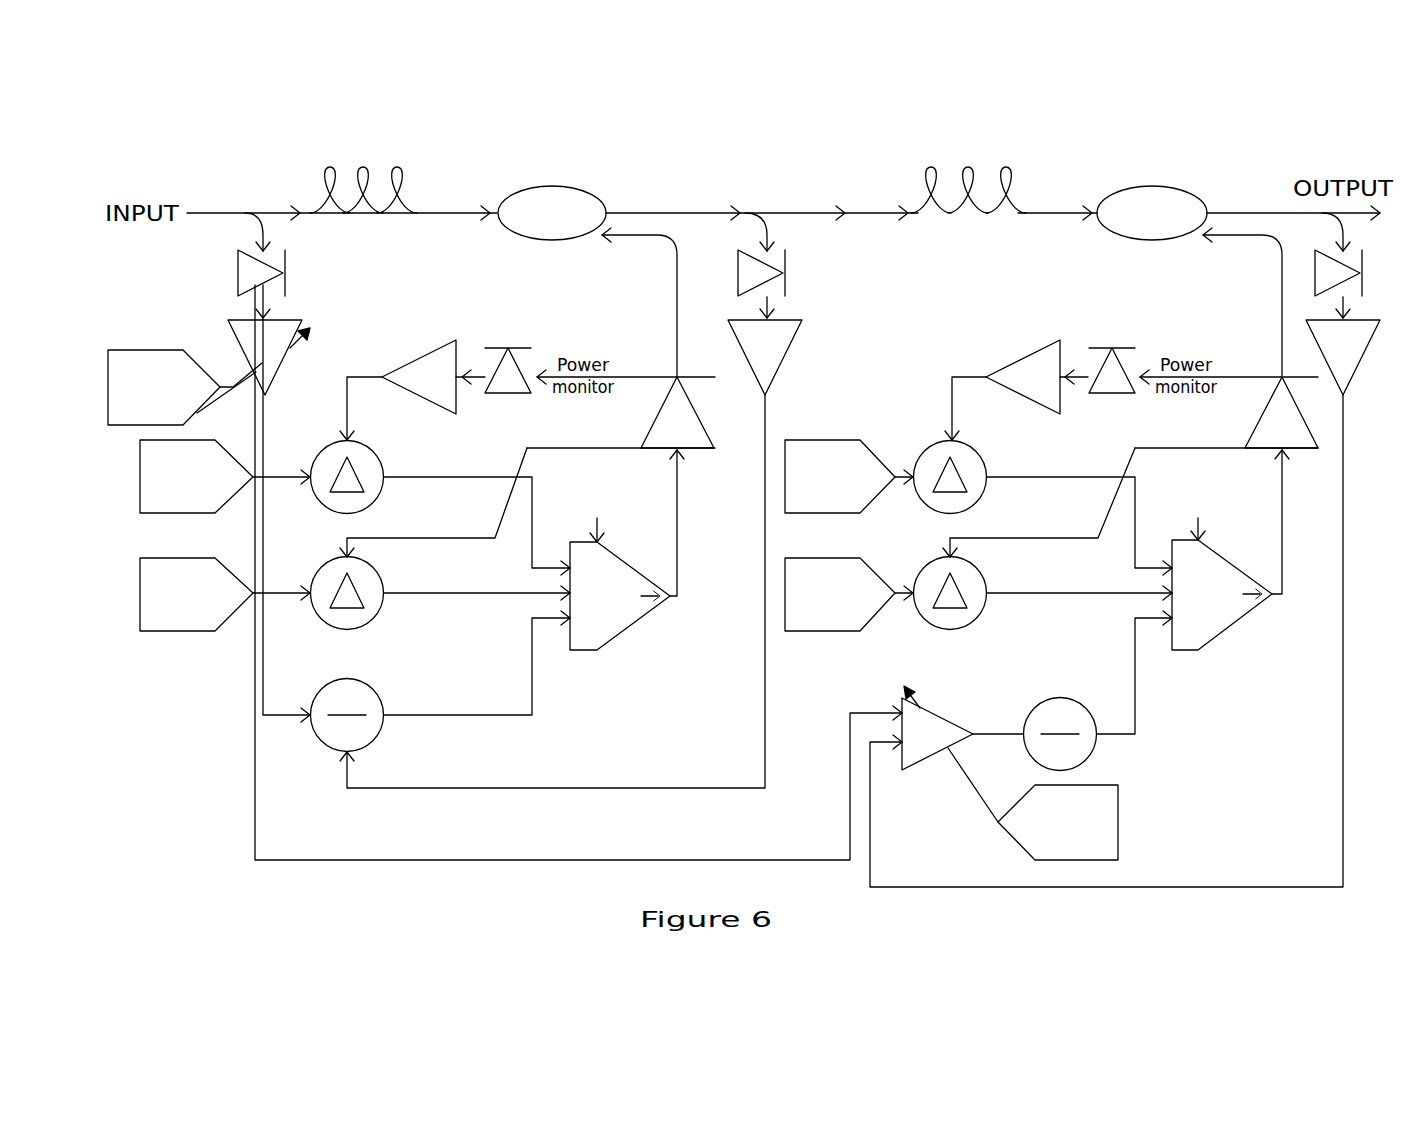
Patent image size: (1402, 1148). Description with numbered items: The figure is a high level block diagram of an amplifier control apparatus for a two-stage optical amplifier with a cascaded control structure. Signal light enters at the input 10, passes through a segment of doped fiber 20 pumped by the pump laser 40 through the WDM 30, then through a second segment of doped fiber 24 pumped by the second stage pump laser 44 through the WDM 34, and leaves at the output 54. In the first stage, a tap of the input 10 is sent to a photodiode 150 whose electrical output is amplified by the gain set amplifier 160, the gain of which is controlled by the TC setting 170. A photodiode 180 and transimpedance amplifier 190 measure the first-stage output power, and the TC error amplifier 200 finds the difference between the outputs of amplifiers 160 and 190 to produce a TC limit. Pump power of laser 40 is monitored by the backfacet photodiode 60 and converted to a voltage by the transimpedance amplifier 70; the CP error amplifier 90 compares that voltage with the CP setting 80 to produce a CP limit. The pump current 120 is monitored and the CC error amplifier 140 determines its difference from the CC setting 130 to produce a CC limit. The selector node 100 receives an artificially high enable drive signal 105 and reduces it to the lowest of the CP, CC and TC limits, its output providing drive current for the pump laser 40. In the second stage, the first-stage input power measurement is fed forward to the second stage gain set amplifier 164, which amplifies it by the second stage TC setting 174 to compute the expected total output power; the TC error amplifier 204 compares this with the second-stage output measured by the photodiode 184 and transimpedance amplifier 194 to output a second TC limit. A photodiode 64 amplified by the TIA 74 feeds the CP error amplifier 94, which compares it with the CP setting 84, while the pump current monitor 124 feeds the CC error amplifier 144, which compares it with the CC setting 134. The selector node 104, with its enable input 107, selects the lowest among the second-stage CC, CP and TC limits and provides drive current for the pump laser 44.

The input 10 is at (157, 190).
The segment of doped fiber 20 is at (382, 168).
The second segment of doped fiber 24 is at (988, 168).
The WDM 30 is at (550, 183).
The WDM 34 is at (1155, 183).
The pump laser 40 is at (716, 434).
The second stage pump laser 44 is at (1318, 440).
The optical amplifier output 54 is at (1318, 175).
The backfacet photodiode 60 is at (508, 343).
The photodiode 64 is at (1112, 343).
The transimpedance amplifier 70 is at (418, 350).
The TIA 74 is at (1025, 350).
The CP setting 80 is at (133, 482).
The CP setting 84 is at (786, 438).
The CP error amplifier 90 is at (318, 447).
The CP error amplifier 94 is at (920, 447).
The selector node 100 is at (633, 633).
The selector node 104 is at (1238, 633).
The enable drive signal 105 is at (645, 512).
The second enable input 107 is at (1245, 508).
The pump current 120 is at (524, 448).
The pump current monitor 124 is at (1129, 448).
The CC setting 130 is at (133, 592).
The CC setting 134 is at (853, 636).
The CC error amplifier 140 is at (318, 566).
The CC error amplifier 144 is at (920, 566).
The photodiode 150 is at (233, 276).
The gain set amplifier 160 is at (233, 343).
The second stage gain set amplifier 164 is at (928, 766).
The TC setting 170 is at (105, 384).
The total current setting input stage 2 174 is at (1121, 821).
The photodiode 180 is at (735, 275).
The photodiode 184 is at (1313, 270).
The transimpedance amplifier 190 is at (735, 340).
The transimpedance amplifier 194 is at (1312, 342).
The TC error amplifier 200 is at (318, 688).
The TC error amplifier 204 is at (1024, 718).